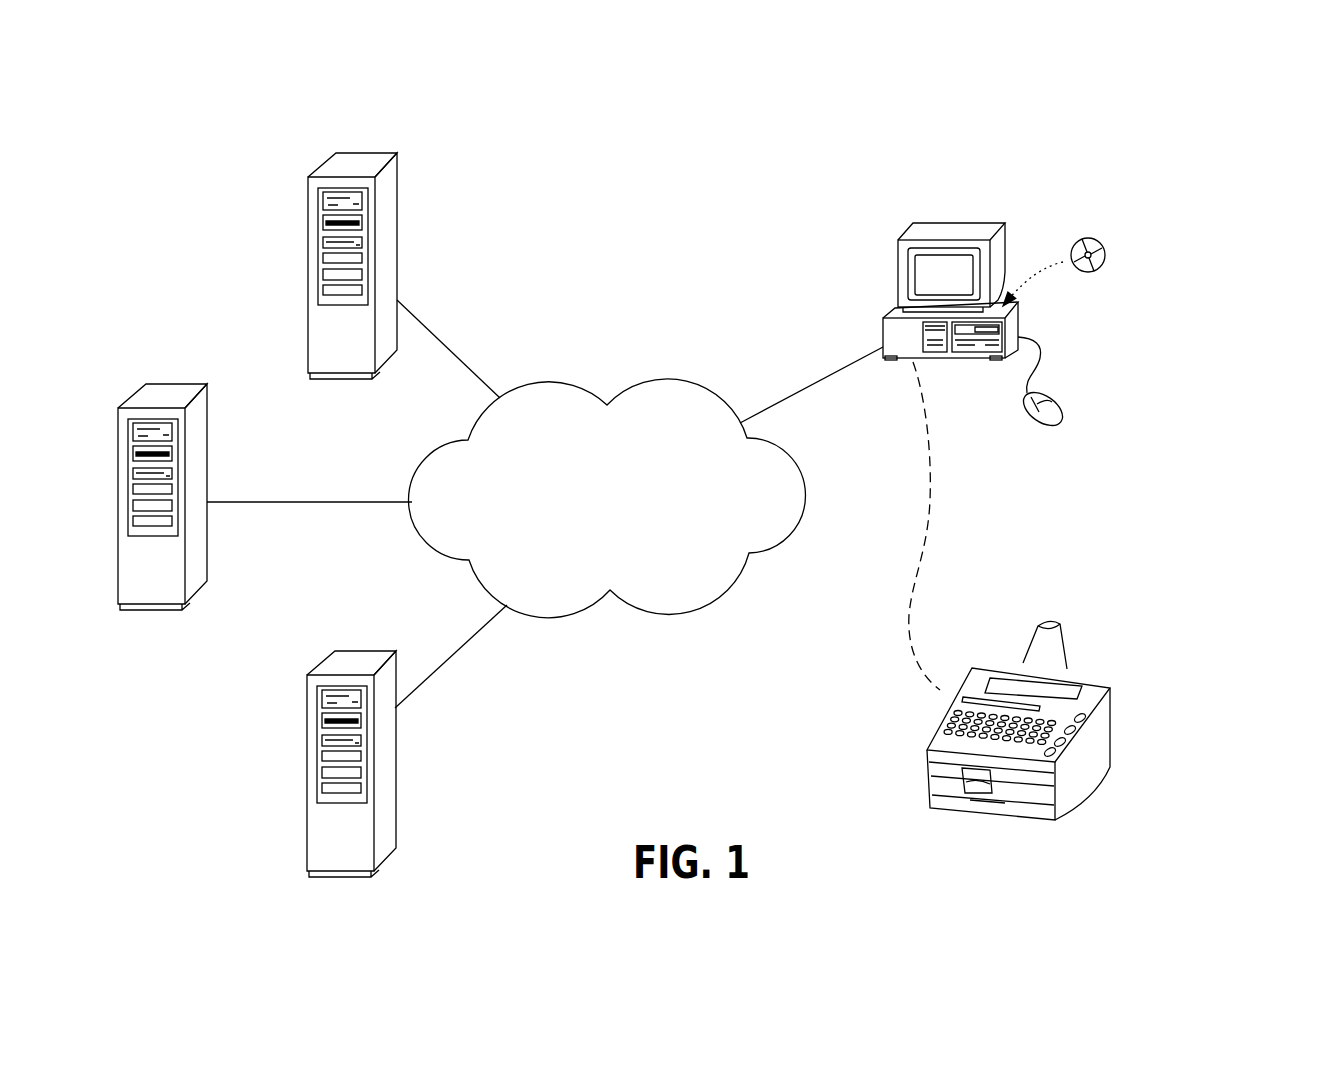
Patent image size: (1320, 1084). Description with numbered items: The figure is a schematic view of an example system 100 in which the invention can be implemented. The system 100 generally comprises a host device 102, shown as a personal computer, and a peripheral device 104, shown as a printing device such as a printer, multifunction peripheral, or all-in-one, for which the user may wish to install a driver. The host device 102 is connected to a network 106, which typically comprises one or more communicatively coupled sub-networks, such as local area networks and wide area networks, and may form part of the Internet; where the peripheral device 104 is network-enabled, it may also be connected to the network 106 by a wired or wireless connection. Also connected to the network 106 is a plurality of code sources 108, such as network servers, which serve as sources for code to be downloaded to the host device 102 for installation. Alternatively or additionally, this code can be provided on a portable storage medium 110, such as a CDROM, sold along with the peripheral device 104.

The system 100 is at (1243, 144).
The host device 102 is at (848, 226).
The peripheral device 104 is at (1117, 640).
The network 106 is at (627, 523).
The code sources 108 is at (426, 200).
The portable storage medium 110 is at (1097, 238).